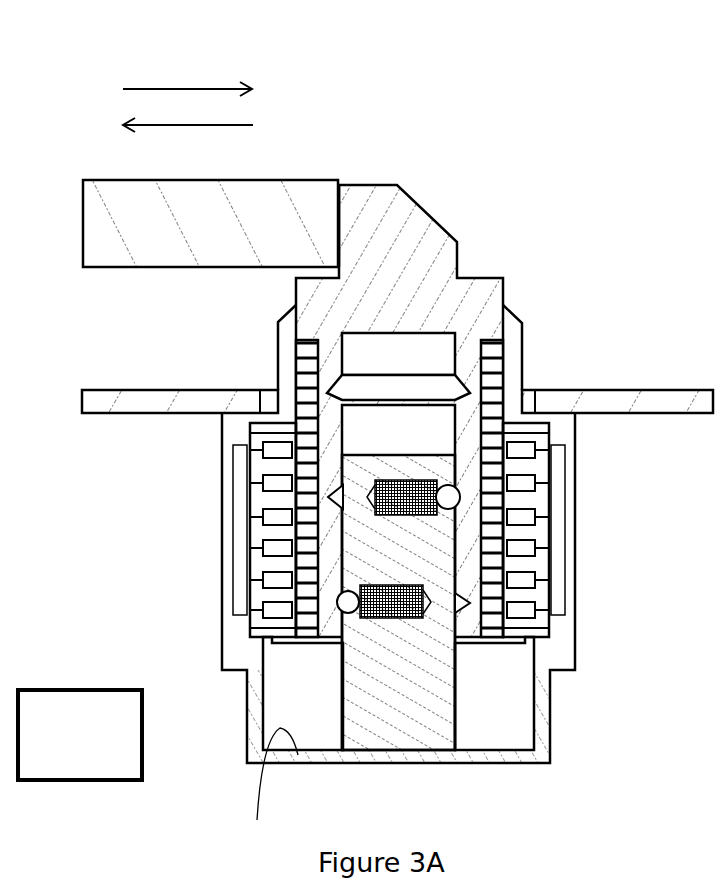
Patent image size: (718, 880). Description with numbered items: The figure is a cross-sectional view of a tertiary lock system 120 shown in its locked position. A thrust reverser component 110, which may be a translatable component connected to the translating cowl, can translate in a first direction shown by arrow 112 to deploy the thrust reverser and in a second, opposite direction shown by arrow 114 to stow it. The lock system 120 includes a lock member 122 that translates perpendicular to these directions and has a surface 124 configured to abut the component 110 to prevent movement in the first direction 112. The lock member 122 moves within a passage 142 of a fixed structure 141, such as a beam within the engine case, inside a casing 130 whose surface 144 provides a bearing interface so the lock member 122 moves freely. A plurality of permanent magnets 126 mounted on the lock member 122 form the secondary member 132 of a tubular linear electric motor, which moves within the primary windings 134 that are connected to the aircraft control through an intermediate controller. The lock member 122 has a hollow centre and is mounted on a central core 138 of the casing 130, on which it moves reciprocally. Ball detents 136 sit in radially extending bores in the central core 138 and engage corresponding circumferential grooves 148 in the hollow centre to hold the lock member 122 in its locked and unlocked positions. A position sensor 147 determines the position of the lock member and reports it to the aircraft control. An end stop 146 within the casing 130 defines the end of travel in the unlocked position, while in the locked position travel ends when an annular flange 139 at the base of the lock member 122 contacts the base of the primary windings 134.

The thrust reverser component 110 is at (137, 248).
The arrow depicting first direction 112 is at (187, 73).
The arrow depicting second direction 114 is at (188, 142).
The tertiary lock system 120 is at (528, 162).
The lock member 122 is at (402, 232).
The surface 124 is at (335, 217).
The permanent magnets 126 is at (490, 547).
The casing 130 is at (232, 522).
The secondary member 132 is at (460, 462).
The primary windings 134 is at (530, 628).
The ball detents 136 is at (452, 500).
The central core 138 is at (398, 702).
The annular flange 139 is at (508, 647).
The fixed structure 141 is at (123, 405).
The passage 142 is at (527, 392).
The surface 144 is at (290, 331).
The end stop 146 is at (261, 794).
The position sensor 147 is at (103, 749).
The circumferential grooves 148 is at (458, 608).